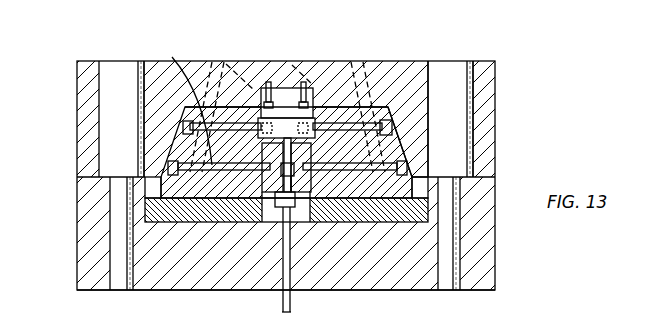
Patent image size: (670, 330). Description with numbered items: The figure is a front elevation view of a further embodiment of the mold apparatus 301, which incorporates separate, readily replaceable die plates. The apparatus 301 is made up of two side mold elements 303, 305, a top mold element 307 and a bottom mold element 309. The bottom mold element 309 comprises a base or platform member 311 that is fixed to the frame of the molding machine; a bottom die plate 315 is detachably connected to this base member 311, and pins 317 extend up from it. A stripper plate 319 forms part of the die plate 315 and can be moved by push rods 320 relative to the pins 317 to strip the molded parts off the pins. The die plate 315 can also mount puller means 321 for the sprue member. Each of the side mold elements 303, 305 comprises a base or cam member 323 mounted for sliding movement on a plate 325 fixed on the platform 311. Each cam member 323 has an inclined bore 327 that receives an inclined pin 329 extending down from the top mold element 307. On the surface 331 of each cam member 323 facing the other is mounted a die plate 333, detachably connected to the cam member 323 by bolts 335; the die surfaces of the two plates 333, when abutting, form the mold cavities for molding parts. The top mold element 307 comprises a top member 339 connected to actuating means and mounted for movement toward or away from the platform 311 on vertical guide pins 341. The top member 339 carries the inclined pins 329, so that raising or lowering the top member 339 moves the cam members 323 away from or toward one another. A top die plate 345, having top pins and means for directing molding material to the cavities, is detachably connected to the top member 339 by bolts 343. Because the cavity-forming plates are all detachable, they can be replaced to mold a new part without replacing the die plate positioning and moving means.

The apparatus 301 is at (534, 62).
The side mold element 303 is at (168, 146).
The side mold element 305 is at (401, 139).
The top mold element 307 is at (188, 59).
The bottom mold element 309 is at (176, 268).
The base or platform member 311 is at (390, 291).
The bottom die plate 315 is at (282, 188).
The pins 317 is at (276, 205).
The stripper plate 319 is at (296, 185).
The push rods 320 is at (281, 298).
The puller means 321 is at (316, 152).
The base or cam member 323 is at (168, 168).
The plate 325 is at (148, 217).
The inclined bore 327 is at (182, 126).
The inclined pin 329 is at (226, 62).
The surface 331 is at (290, 137).
The die plate 333 is at (266, 156).
The bolts 335 is at (175, 100).
The top member 339 is at (405, 61).
The vertical guide pins 341 is at (109, 72).
The bolts 343 is at (297, 67).
The top die plate 345 is at (289, 93).